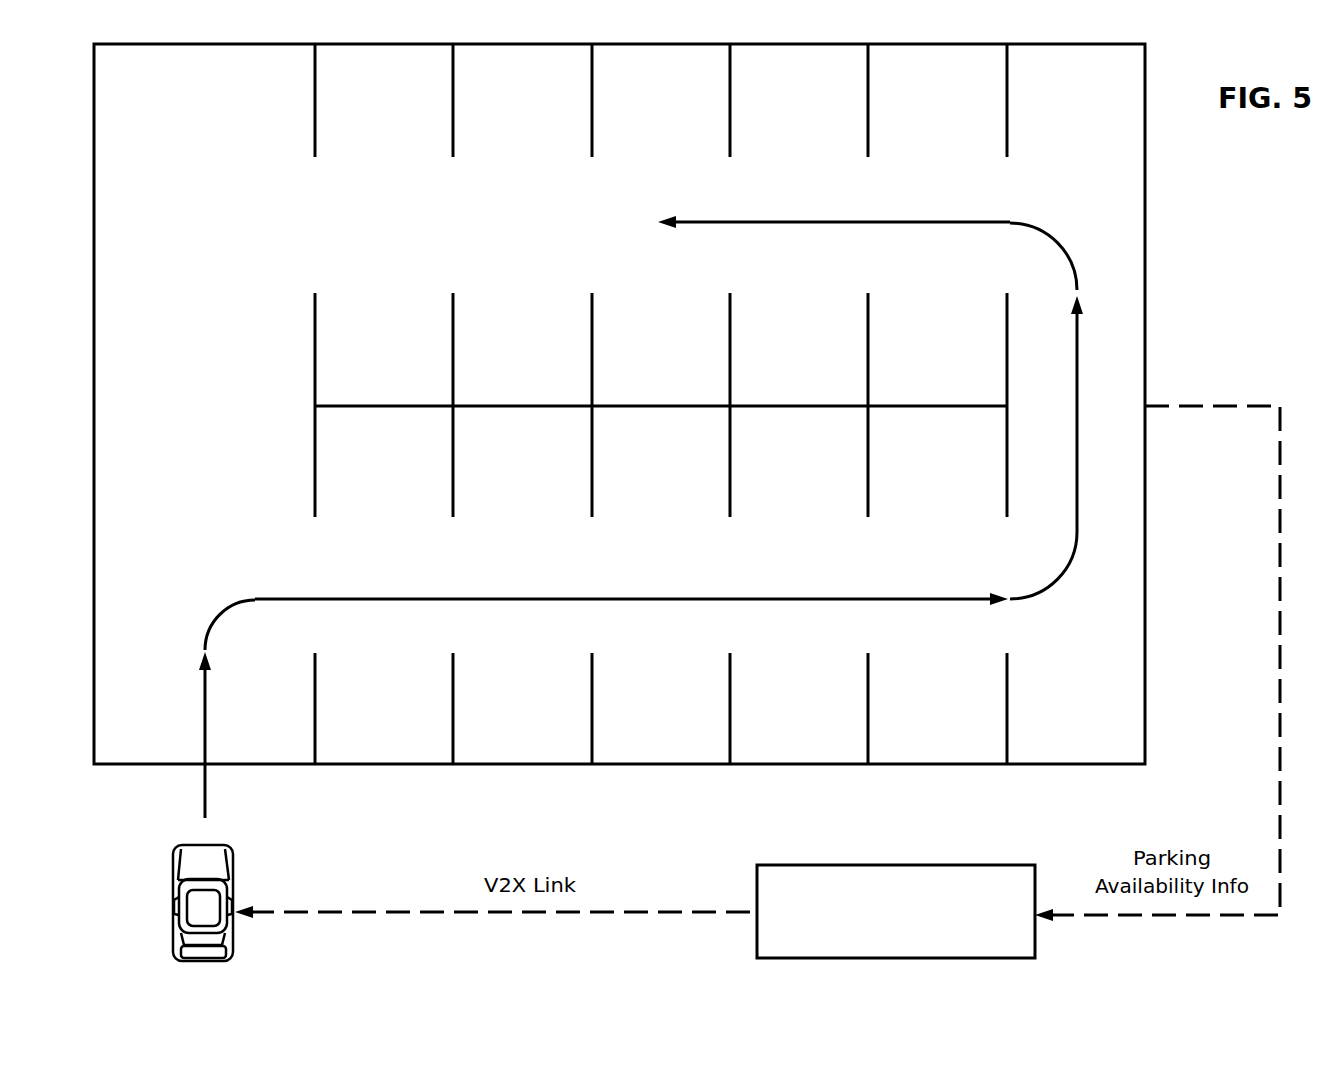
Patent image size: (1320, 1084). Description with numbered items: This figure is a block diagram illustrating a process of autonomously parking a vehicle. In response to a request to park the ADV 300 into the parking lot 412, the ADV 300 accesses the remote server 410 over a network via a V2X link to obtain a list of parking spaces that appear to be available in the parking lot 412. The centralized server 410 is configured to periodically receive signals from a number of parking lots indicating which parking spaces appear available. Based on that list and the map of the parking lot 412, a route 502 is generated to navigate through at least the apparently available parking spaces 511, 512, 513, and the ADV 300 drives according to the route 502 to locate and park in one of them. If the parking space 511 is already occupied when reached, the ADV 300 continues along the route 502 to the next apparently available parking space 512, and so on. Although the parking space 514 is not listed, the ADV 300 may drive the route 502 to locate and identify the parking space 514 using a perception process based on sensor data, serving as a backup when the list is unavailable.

The parking lot 412 is at (185, 133).
The parking space 513 is at (637, 118).
The parking space 512 is at (657, 478).
The parking space 511 is at (538, 728).
The parking space 514 is at (962, 728).
The route 502 is at (813, 599).
The ADV 300 is at (232, 850).
The remote server 410 is at (878, 948).